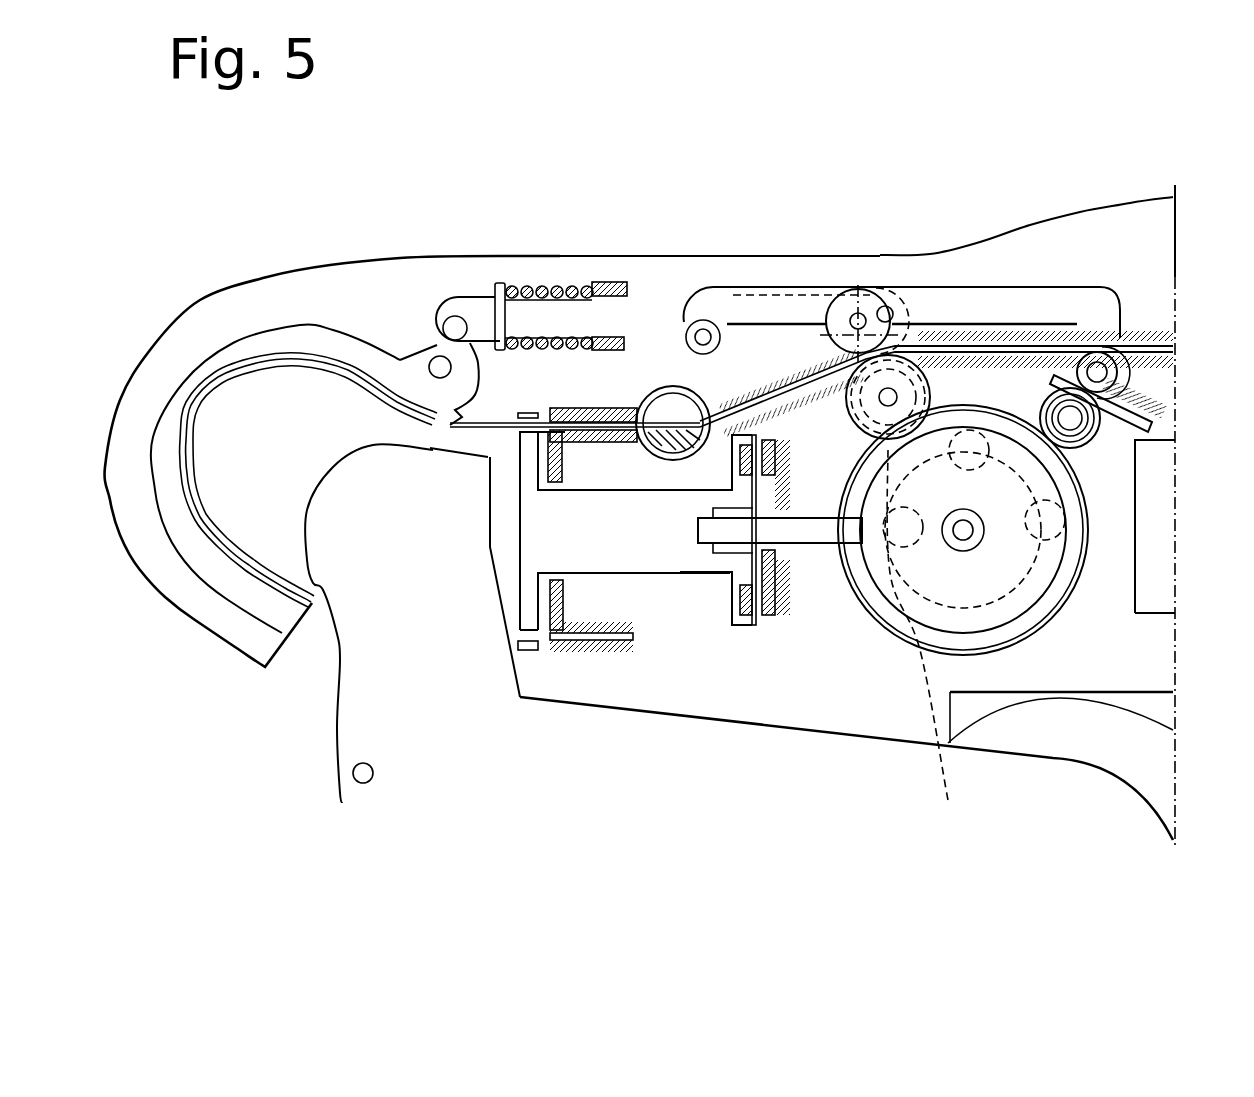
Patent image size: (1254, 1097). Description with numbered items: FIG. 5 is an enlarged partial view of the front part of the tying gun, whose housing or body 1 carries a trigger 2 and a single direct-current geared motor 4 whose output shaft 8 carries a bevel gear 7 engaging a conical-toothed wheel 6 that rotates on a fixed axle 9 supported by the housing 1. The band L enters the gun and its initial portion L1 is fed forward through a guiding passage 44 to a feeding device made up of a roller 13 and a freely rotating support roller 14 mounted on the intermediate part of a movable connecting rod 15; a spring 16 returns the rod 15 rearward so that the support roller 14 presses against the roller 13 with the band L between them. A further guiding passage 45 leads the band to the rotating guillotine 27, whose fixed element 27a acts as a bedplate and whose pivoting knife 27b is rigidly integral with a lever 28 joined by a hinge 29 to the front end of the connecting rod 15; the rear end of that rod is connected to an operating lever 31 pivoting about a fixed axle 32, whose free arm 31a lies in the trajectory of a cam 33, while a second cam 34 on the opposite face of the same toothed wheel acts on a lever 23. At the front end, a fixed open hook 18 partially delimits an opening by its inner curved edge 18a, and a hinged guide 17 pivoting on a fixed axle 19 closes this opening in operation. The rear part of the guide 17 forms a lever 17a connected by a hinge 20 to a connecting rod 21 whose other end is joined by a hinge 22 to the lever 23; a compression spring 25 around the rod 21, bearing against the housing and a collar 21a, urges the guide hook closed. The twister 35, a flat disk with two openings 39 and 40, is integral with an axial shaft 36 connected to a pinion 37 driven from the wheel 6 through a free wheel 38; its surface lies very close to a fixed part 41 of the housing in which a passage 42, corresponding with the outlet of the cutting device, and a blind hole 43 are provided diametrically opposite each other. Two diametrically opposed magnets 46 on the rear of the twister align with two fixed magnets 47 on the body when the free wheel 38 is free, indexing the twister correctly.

The fixed open hook 18 is at (177, 337).
The hinged guide 17 is at (192, 385).
The initial portion of the band L1 is at (238, 370).
The fixed axle 19 is at (433, 360).
The lever 17a is at (432, 340).
The hinge 20 is at (440, 300).
The collar 21a is at (468, 297).
The spring 25 is at (525, 273).
The opening 40 is at (513, 413).
The passage 42 is at (572, 407).
The connecting rod 21 is at (643, 350).
The pivoting element 27b is at (653, 390).
The lever 28 is at (670, 330).
The hinge 29 is at (707, 320).
The guiding passage 45 is at (802, 360).
The support roller 14 is at (868, 305).
The hinge 22 is at (887, 305).
The roller 13 is at (963, 287).
The connecting rod 15 is at (1002, 340).
The guiding passage 44 is at (1017, 360).
The housing 1 is at (1087, 230).
The cam 33 is at (1000, 432).
The band L is at (1108, 337).
The spring 16 is at (1112, 398).
The inner curved edge 18a is at (375, 567).
The twister 35 is at (522, 573).
The opening 39 is at (518, 645).
The fixed part 41 is at (522, 695).
The blind hole 43 is at (587, 640).
The axial shaft 36 is at (633, 573).
The rotating guillotine 27 is at (668, 477).
The fixed element 27a is at (685, 440).
The free wheel 38 is at (743, 625).
The magnets 46 is at (767, 623).
The magnets 47 is at (818, 545).
The lever 23 is at (850, 460).
The pinion 37 is at (858, 470).
The cam 34 is at (963, 540).
The fixed axle 9 is at (950, 635).
The conical-toothed wheel 6 is at (980, 640).
The bevel gear 7 is at (1040, 530).
The trigger 2 is at (1102, 737).
The geared motor 4 is at (1163, 600).
The output shaft 8 is at (1150, 555).
The operating lever 31 is at (1075, 421).
The fixed axle 32 is at (1105, 395).
The free arm 31a is at (1072, 422).